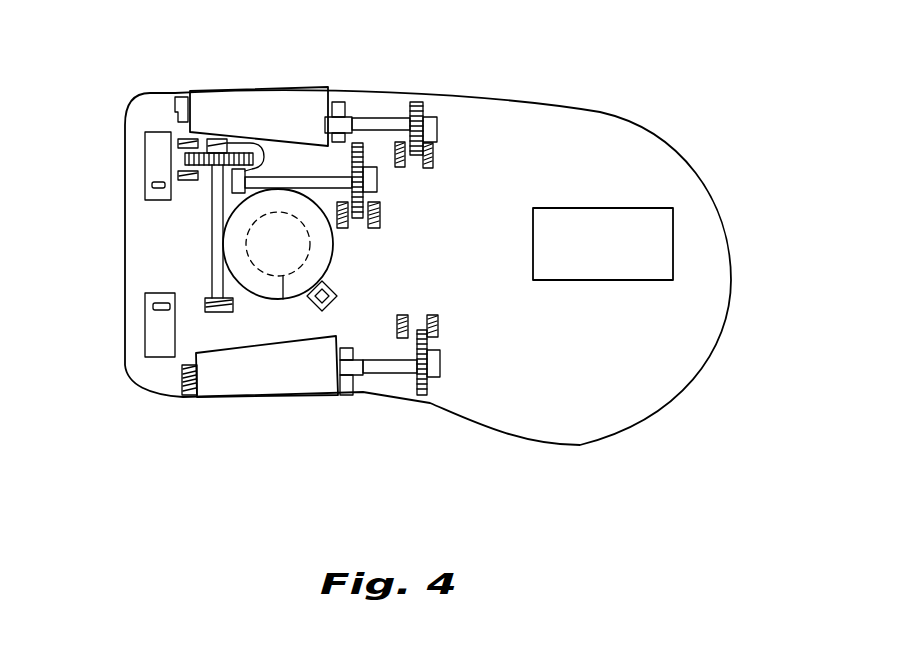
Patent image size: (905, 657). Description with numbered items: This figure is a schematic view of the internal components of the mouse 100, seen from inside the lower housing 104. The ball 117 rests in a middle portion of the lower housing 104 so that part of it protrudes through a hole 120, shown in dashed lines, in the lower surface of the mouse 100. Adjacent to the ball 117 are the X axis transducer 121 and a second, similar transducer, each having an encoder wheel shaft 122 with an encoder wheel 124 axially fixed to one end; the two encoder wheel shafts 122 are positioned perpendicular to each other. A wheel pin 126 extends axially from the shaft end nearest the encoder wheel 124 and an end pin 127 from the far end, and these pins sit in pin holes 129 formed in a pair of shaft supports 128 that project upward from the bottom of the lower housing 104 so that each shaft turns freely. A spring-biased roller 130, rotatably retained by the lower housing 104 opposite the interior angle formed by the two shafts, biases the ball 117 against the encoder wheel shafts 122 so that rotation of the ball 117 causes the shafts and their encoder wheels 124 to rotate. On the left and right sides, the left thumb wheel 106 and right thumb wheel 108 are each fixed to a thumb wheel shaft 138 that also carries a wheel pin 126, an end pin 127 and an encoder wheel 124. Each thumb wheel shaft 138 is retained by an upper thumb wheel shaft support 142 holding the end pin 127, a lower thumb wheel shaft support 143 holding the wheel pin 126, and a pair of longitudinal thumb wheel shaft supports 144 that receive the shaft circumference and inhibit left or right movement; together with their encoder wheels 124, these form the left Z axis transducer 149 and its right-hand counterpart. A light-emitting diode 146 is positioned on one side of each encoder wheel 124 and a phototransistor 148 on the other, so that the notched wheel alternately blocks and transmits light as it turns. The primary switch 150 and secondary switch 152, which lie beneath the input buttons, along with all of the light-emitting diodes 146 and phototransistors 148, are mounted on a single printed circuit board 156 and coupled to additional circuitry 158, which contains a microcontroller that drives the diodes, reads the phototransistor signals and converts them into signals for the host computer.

The mouse 100 is at (752, 117).
The lower housing 104 is at (717, 208).
The left thumb wheel 106 is at (267, 385).
The right thumb wheel 108 is at (280, 100).
The ball 117 is at (337, 268).
The hole 120 is at (283, 299).
The X axis transducer 121 is at (455, 211).
The encoder wheel shaft 122 is at (212, 218).
The encoder wheel 124 is at (418, 100).
The wheel pin 126 is at (227, 145).
The end pin 127 is at (203, 300).
The shaft support 128 is at (378, 192).
The pin hole 129 is at (203, 139).
The spring-biased roller 130 is at (325, 298).
The thumb wheel shaft 138 is at (377, 120).
The upper thumb wheel shaft support 142 is at (170, 97).
The lower thumb wheel shaft support 143 is at (437, 117).
The longitudinal thumb wheel shaft support 144 is at (350, 97).
The light-emitting diode 146 is at (400, 168).
The phototransistor 148 is at (438, 158).
The left Z axis transducer 149 is at (419, 62).
The primary switch 150 is at (157, 327).
The secondary switch 152 is at (157, 161).
The printed circuit board 156 is at (520, 110).
The additional circuitry 158 is at (608, 208).